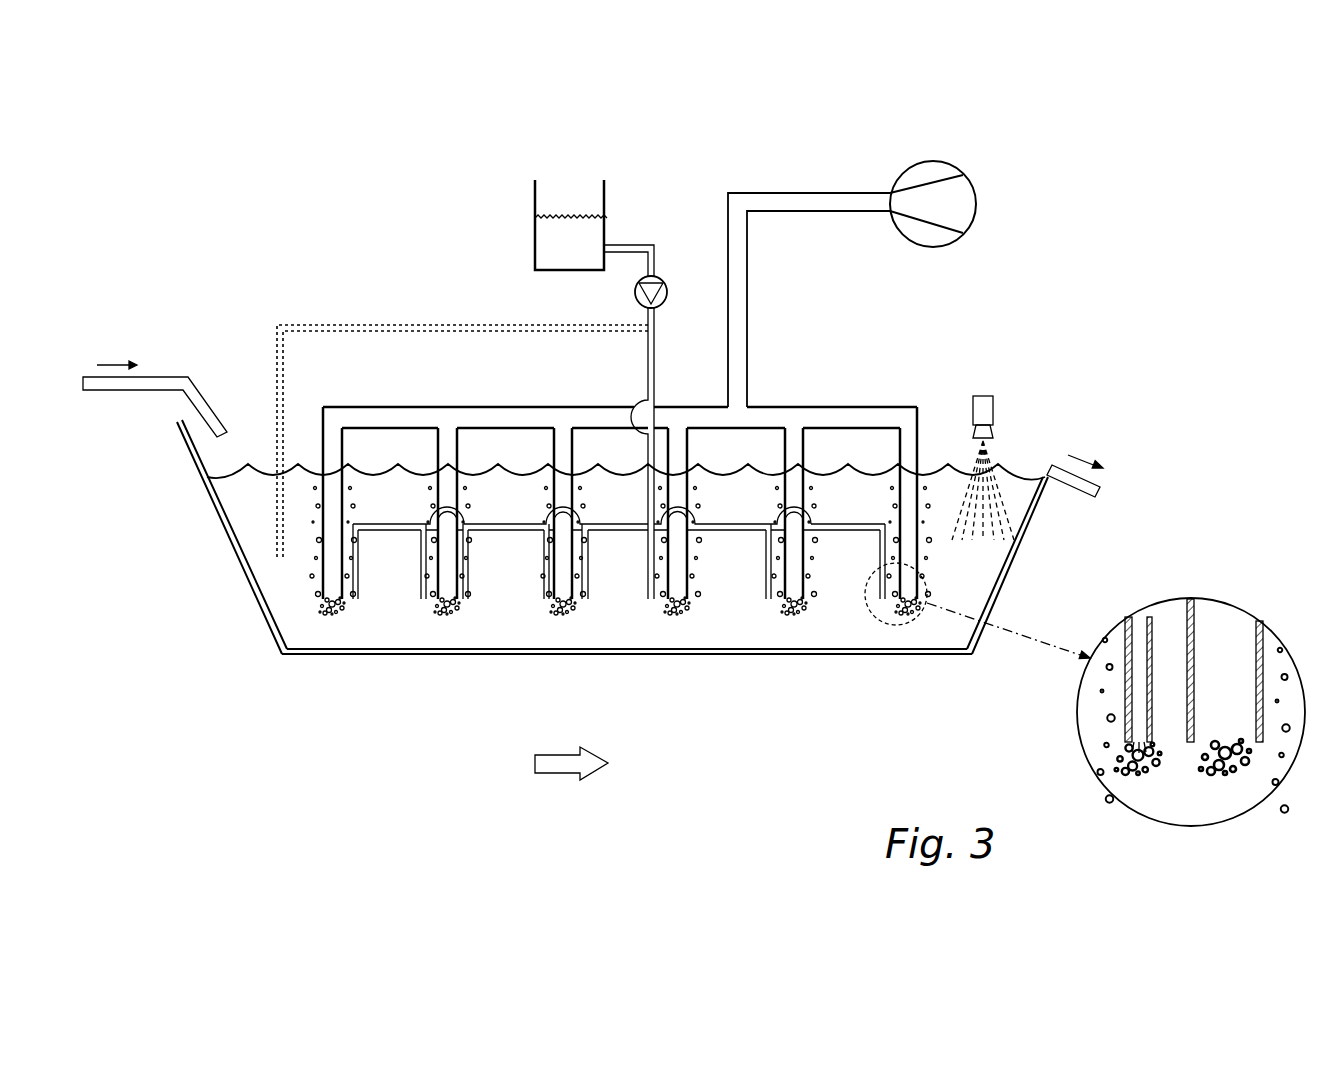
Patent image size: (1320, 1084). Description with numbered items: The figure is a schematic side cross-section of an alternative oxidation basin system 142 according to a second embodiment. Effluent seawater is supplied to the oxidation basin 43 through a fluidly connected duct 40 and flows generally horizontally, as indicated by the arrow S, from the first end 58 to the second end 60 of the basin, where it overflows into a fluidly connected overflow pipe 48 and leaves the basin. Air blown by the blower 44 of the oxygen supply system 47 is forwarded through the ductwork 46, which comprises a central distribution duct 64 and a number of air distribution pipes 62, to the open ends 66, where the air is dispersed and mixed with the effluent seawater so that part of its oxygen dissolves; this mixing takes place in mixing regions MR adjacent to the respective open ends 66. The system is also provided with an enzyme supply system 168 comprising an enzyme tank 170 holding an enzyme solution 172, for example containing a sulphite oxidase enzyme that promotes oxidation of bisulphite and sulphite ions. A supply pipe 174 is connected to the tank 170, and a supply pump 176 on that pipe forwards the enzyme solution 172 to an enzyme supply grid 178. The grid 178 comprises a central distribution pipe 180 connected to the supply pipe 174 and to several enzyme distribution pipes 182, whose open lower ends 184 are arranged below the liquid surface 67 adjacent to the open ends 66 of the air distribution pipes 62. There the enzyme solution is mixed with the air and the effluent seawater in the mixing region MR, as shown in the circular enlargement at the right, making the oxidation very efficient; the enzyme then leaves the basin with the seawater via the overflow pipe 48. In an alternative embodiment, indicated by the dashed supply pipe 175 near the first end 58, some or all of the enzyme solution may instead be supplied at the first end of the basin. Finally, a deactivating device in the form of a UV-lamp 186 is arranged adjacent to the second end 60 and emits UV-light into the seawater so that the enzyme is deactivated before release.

The duct 40 is at (120, 392).
The oxidation basin 43 is at (352, 658).
The blower 44 is at (977, 190).
The ductwork 46 is at (540, 402).
The oxygen supply system 47 is at (1060, 232).
The overflow pipe 48 is at (1070, 485).
The first end 58 is at (205, 508).
The second end 60 is at (1012, 565).
The air distribution pipes 62 is at (323, 440).
The central distribution duct 64 is at (420, 415).
The open ends 66 is at (798, 618).
The liquid surface 67 is at (1027, 480).
The oxidation basin system 142 is at (532, 219).
The enzyme supply system 168 is at (665, 198).
The enzyme tank 170 is at (534, 252).
The enzyme solution 172 is at (568, 226).
The supply pipe 174 is at (646, 262).
The supply pipe 175 is at (331, 324).
The supply pump 176 is at (660, 306).
The enzyme supply grid 178 is at (848, 518).
The central distribution pipe 180 is at (395, 523).
The enzyme distribution pipes 182 is at (365, 565).
The lower ends 184 is at (884, 626).
The UV-lamp 186 is at (981, 394).
The mixing region MR is at (452, 618).
The arrow S is at (567, 758).